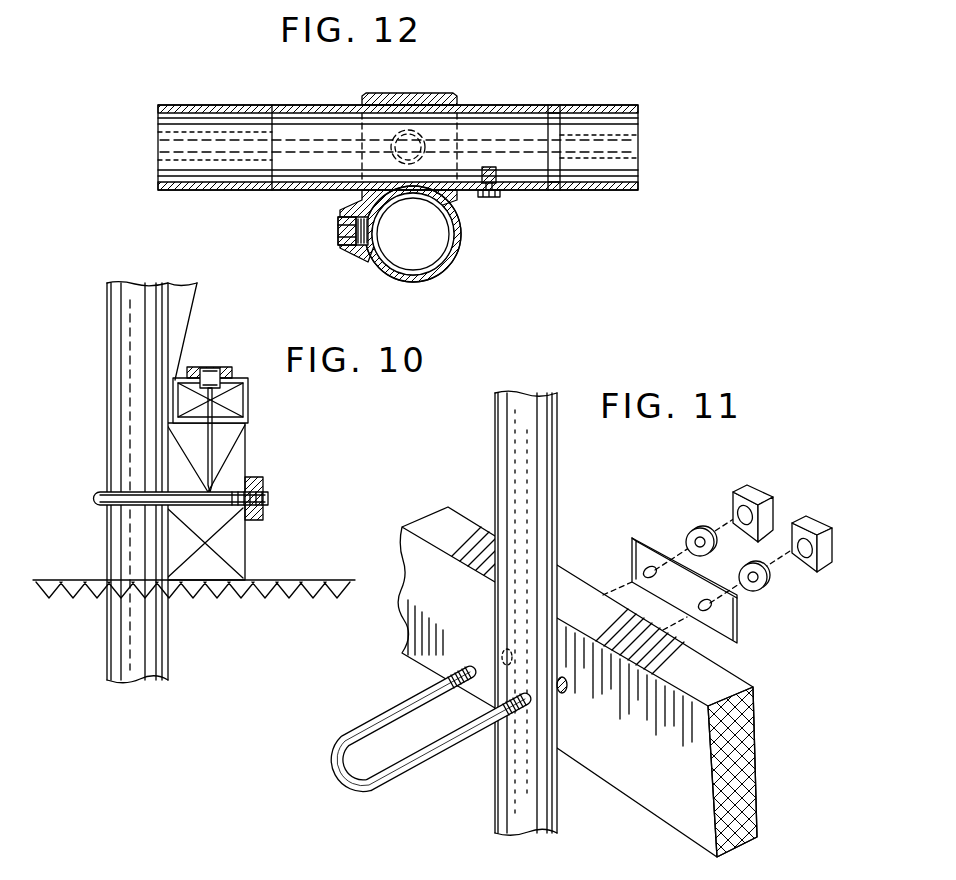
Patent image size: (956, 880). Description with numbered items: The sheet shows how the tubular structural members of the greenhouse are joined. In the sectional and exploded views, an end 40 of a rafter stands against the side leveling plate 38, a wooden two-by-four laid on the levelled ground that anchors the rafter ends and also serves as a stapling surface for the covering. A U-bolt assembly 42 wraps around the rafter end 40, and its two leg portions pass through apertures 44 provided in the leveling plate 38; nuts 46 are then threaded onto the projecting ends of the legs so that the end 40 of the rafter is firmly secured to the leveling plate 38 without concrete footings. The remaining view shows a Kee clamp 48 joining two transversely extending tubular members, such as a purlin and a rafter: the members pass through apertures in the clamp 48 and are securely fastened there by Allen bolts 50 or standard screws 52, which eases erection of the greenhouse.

In FIG. 10, the side leveling plate 38 is at (238, 452).
In FIG. 11, the side leveling plate 38 is at (692, 800).
In FIG. 10, the end of the rafter 40 is at (158, 640).
In FIG. 11, the end of the rafter 40 is at (540, 800).
In FIG. 10, the U-bolt assembly 42 is at (100, 558).
In FIG. 11, the U-bolt assembly 42 is at (408, 678).
In FIG. 11, the apertures 44 is at (568, 688).
In FIG. 10, the nuts 46 is at (268, 496).
In FIG. 11, the nuts 46 is at (772, 515).
In FIG. 12, the Kee clamp 48 is at (450, 262).
In FIG. 12, the Allen bolts 50 is at (337, 232).
In FIG. 12, the standard screws 52 is at (497, 198).